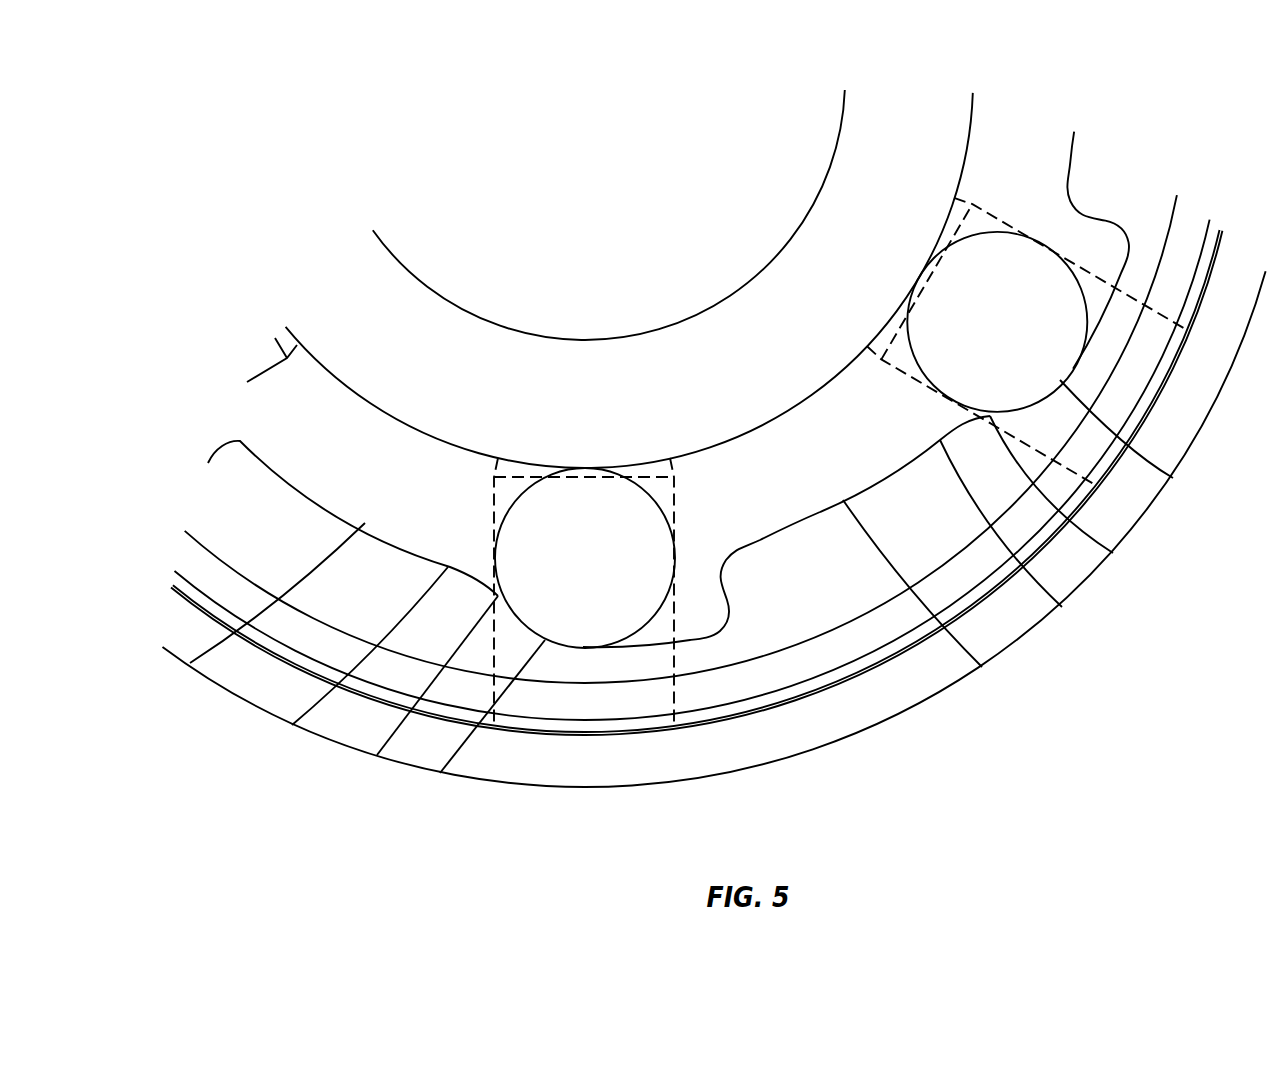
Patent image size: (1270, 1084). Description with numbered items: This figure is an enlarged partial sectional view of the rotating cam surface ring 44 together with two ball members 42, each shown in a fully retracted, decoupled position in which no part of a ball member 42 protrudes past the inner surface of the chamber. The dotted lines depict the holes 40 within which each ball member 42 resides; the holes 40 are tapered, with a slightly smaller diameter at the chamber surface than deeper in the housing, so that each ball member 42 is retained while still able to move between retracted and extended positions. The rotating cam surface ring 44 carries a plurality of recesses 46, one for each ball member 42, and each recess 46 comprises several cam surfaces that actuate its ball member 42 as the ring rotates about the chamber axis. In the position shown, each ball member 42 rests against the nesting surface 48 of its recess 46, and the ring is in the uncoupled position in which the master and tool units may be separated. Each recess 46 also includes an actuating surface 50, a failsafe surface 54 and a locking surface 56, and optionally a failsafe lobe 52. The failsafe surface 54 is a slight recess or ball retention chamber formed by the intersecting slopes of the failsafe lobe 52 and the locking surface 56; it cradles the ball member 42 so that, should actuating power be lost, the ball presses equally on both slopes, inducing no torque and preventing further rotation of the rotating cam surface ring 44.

The hole 40 is at (883, 337).
The ball member 42 is at (791, 440).
The rotating cam surface ring 44 is at (778, 613).
The recess 46 is at (1056, 220).
The nesting surface 48 is at (440, 773).
The actuating surface 50 is at (377, 755).
The failsafe lobe 52 is at (483, 582).
The failsafe surface 54 is at (292, 725).
The locking surface 56 is at (190, 663).